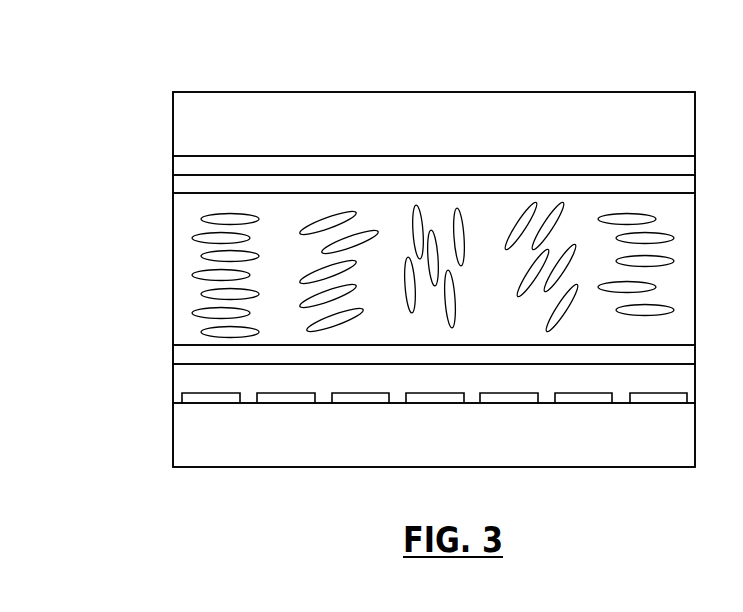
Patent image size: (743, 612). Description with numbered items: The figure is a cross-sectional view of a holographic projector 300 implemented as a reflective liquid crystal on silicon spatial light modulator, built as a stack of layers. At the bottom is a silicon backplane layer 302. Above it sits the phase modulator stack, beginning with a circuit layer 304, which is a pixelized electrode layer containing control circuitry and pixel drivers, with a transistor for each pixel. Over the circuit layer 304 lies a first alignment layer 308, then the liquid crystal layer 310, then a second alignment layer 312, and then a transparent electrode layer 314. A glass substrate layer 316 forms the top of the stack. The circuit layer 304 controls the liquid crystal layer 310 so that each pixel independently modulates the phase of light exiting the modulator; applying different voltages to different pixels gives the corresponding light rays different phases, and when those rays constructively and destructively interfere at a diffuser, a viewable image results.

The holographic projector 300 is at (135, 33).
The silicon backplane layer 302 is at (173, 437).
The circuit layer 304 is at (173, 383).
The first alignment layer 308 is at (173, 355).
The liquid crystal layer 310 is at (173, 238).
The second alignment layer 312 is at (173, 187).
The transparent electrode layer 314 is at (173, 166).
The glass substrate layer 316 is at (173, 124).